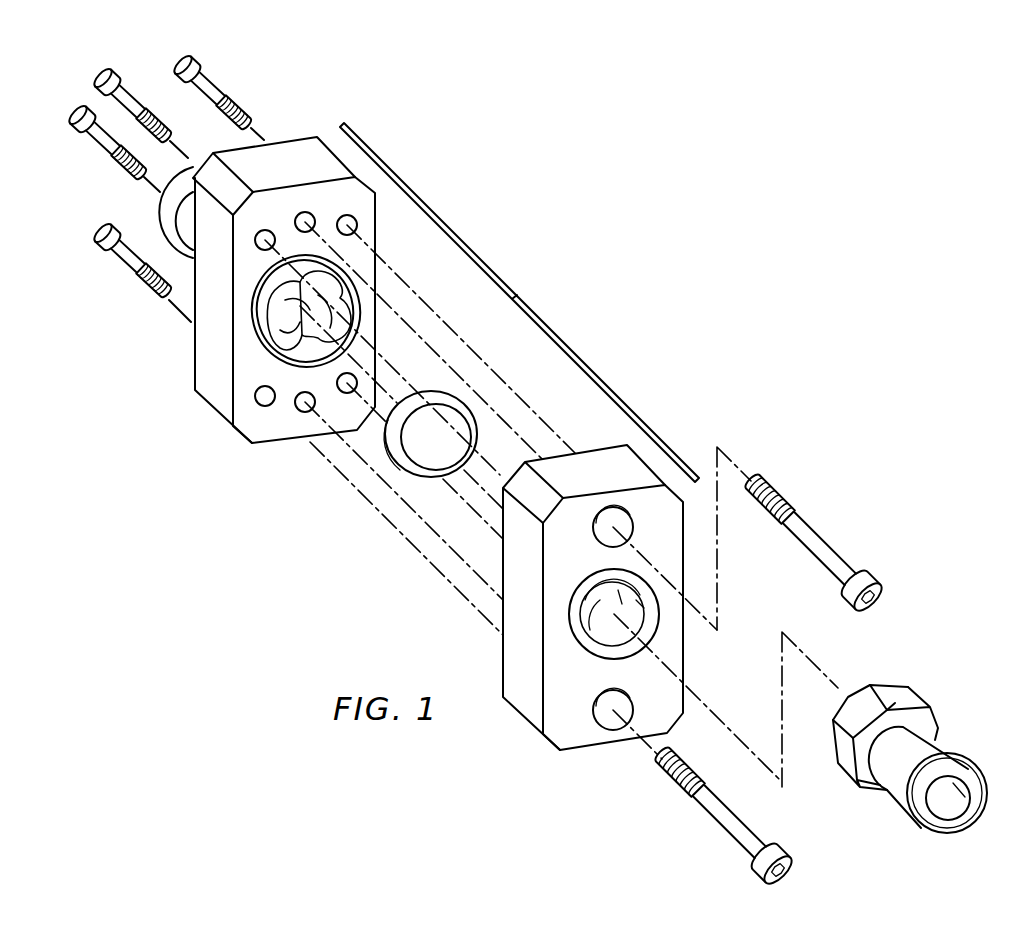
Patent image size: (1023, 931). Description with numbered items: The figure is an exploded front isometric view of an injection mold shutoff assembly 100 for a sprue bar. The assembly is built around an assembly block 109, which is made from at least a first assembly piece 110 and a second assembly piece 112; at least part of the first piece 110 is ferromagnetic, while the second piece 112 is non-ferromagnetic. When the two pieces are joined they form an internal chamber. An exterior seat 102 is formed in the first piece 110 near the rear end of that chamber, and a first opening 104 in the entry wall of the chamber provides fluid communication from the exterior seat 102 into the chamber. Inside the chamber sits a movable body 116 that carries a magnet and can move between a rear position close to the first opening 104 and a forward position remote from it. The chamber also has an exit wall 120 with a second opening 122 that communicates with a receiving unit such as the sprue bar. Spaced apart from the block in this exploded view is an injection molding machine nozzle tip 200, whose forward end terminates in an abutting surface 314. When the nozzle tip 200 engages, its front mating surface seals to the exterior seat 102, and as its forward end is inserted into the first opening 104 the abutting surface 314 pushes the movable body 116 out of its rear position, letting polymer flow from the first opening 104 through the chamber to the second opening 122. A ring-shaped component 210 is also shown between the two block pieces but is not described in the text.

The injection mold shutoff assembly 100 is at (693, 252).
The exterior seat 102 is at (647, 630).
The first opening 104 is at (603, 646).
The assembly block 109 is at (516, 303).
The first assembly piece 110 is at (526, 720).
The second assembly piece 112 is at (215, 410).
The movable body 116 is at (490, 431).
The exit wall 120 is at (317, 367).
The second opening 122 is at (342, 290).
The injection molding machine nozzle tip 200 is at (932, 698).
The ring 210 is at (440, 468).
The abutting surface 314 is at (850, 690).